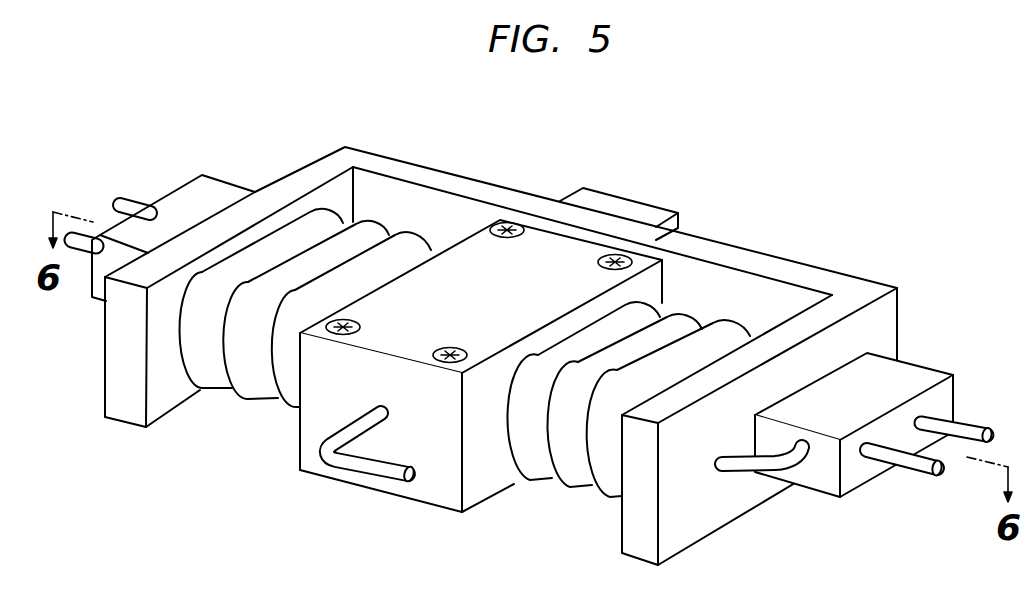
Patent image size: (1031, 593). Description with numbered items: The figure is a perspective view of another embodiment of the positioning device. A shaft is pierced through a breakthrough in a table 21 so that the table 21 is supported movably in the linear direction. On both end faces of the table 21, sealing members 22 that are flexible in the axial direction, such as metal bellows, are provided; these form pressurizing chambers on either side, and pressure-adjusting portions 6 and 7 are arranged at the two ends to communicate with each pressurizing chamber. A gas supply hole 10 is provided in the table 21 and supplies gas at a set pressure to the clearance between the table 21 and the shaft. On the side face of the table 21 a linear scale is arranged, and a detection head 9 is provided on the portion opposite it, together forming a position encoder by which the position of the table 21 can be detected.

The pressure-adjusting portion 6 is at (242, 182).
The pressure-adjusting portion 7 is at (937, 355).
The detection head 9 is at (658, 213).
The gas supply hole 10 is at (362, 466).
The table 21 is at (531, 241).
The sealing members 22 is at (254, 396).